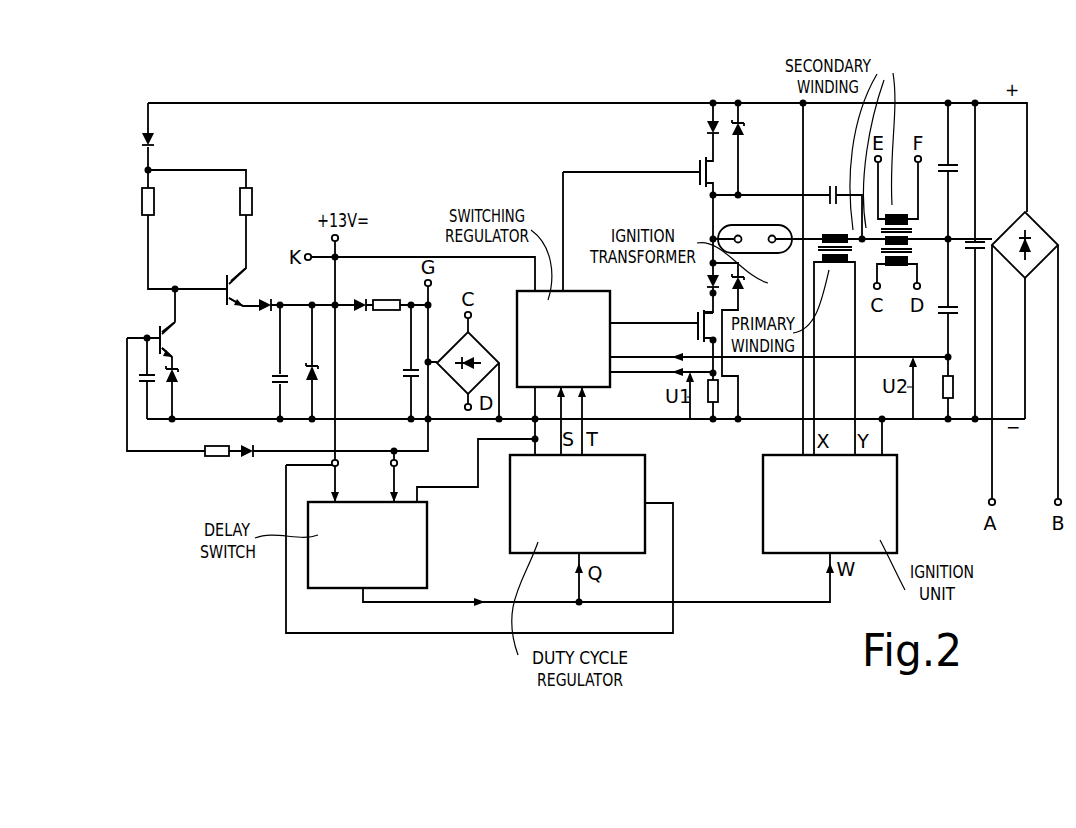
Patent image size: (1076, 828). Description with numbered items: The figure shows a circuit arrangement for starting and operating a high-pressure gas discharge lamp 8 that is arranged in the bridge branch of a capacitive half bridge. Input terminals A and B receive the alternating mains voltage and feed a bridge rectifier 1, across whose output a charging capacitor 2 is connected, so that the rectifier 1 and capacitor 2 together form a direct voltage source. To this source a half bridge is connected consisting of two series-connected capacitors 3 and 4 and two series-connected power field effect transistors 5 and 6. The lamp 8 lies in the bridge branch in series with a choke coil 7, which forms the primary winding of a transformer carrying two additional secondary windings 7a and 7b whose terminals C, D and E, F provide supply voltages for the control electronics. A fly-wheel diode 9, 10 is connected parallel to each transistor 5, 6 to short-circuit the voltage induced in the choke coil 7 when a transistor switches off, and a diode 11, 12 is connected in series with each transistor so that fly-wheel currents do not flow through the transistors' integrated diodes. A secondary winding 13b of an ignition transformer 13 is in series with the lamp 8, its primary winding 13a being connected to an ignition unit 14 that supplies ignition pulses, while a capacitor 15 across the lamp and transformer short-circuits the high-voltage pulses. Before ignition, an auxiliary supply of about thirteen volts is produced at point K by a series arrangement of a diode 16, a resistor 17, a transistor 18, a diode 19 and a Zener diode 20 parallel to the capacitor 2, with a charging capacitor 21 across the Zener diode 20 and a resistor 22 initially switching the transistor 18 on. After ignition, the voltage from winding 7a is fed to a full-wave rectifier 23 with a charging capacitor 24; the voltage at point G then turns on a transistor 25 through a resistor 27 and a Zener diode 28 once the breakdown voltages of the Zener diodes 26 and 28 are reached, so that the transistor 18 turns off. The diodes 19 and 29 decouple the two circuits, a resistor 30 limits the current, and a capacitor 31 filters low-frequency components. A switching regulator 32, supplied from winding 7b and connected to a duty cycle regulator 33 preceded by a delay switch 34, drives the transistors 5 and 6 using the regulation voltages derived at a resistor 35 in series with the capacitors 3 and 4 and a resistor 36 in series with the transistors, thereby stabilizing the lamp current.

The bridge rectifier 1 is at (1040, 242).
The charging capacitor 2 is at (977, 238).
The capacitor 3 is at (953, 152).
The capacitor 4 is at (952, 316).
The power field effect transistor 5 is at (698, 167).
The power field effect transistor 6 is at (697, 320).
The choke coil 7 is at (906, 240).
The secondary winding 7a is at (880, 262).
The secondary winding 7b is at (894, 214).
The high-pressure gas discharge lamp 8 is at (756, 232).
The fly-wheel diode 9 is at (746, 132).
The fly-wheel diode 10 is at (743, 287).
The diode 11 is at (711, 123).
The diode 12 is at (706, 284).
The ignition transformer 13 is at (809, 266).
The primary winding 13a is at (818, 318).
The secondary winding 13b is at (835, 234).
The ignition unit 14 is at (830, 504).
The capacitor 15 is at (832, 186).
The diode 16 is at (142, 140).
The resistor 17 is at (252, 197).
The transistor 18 is at (240, 284).
The diode 19 is at (263, 311).
The Zener diode 20 is at (322, 387).
The charging capacitor 21 is at (271, 378).
The resistor 22 is at (141, 199).
The full-wave rectifier 23 is at (480, 348).
The charging capacitor 24 is at (407, 372).
The transistor 25 is at (166, 338).
The Zener diode 26 is at (185, 379).
The resistor 27 is at (212, 458).
The Zener diode 28 is at (248, 460).
The diode 29 is at (358, 301).
The resistor 30 is at (393, 311).
The capacitor 31 is at (138, 379).
The switching regulator 32 is at (563, 339).
The duty cycle regulator 33 is at (577, 504).
The delay switch 34 is at (367, 545).
The resistor 35 is at (955, 398).
The resistor 36 is at (718, 398).